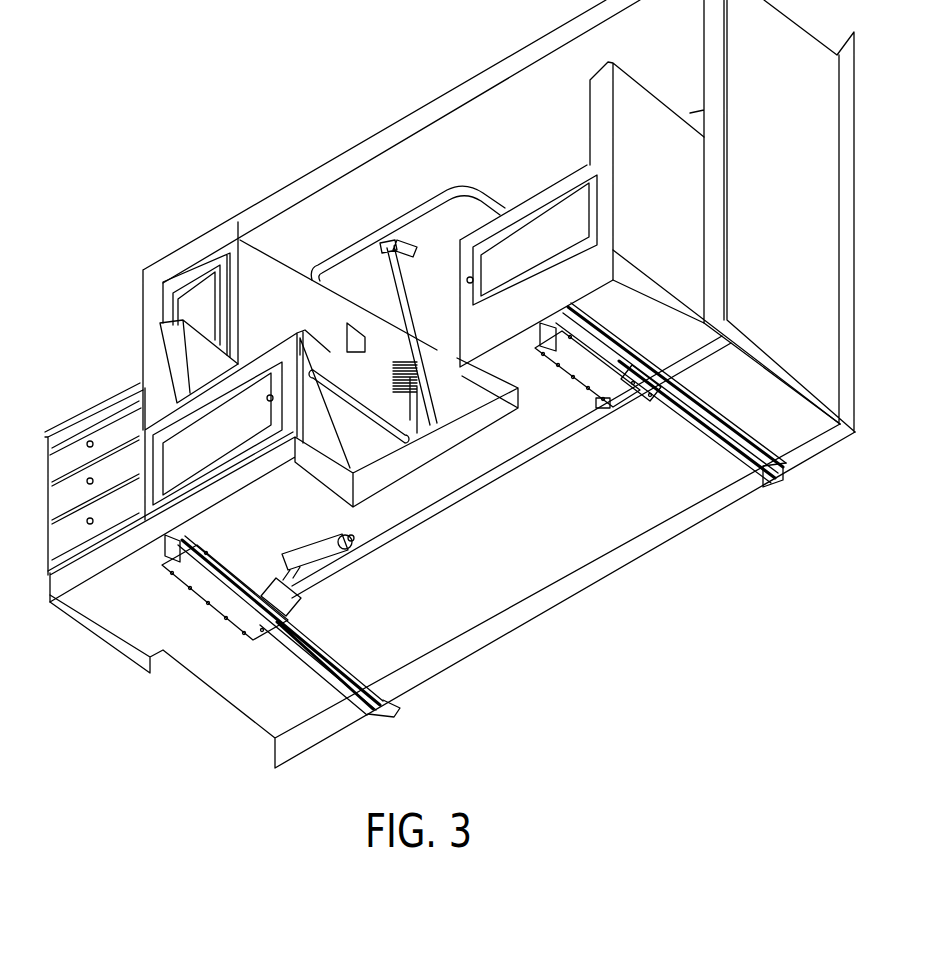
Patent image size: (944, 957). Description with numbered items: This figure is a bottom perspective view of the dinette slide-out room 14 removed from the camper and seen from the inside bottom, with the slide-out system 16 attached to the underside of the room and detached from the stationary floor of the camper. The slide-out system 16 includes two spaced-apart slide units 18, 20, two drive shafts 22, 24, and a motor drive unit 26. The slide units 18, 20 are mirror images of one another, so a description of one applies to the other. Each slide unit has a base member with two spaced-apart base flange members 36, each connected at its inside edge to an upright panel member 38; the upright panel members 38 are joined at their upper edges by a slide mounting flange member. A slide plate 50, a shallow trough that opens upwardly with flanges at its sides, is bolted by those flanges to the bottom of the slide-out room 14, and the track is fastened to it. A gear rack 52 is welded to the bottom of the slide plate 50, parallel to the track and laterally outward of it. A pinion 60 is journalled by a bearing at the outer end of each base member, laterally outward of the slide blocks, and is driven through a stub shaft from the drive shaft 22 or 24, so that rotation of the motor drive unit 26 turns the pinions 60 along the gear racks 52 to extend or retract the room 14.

The slide-out room 14 is at (641, 561).
The slide-out system 16 is at (731, 413).
The slide unit 18 is at (704, 457).
The slide unit 20 is at (364, 633).
The drive shaft 22 is at (412, 528).
The drive shaft 24 is at (272, 595).
The motor drive unit 26 is at (322, 548).
The base flange member 36 is at (215, 603).
The upright panel member 38 is at (603, 403).
The slide plate 50 is at (208, 546).
The gear rack 52 is at (340, 680).
The pinion 60 is at (647, 388).